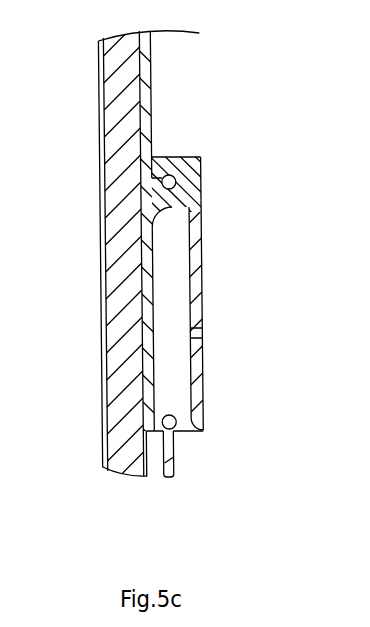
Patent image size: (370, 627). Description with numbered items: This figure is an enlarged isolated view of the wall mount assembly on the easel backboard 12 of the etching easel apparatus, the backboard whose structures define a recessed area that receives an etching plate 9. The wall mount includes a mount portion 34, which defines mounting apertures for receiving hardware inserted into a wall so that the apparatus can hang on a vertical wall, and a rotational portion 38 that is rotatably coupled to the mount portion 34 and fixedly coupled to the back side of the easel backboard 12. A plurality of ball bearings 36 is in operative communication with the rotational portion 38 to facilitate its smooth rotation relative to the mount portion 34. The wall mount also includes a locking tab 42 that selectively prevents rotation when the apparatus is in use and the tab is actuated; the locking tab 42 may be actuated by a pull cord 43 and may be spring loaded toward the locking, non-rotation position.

The etching plate 9 is at (102, 187).
The easel backboard 12 is at (120, 78).
The mount portion 34 is at (203, 265).
The ball bearings 36 is at (177, 181).
The rotational portion 38 is at (153, 316).
The locking tab 42 is at (190, 432).
The pull cord 43 is at (172, 460).